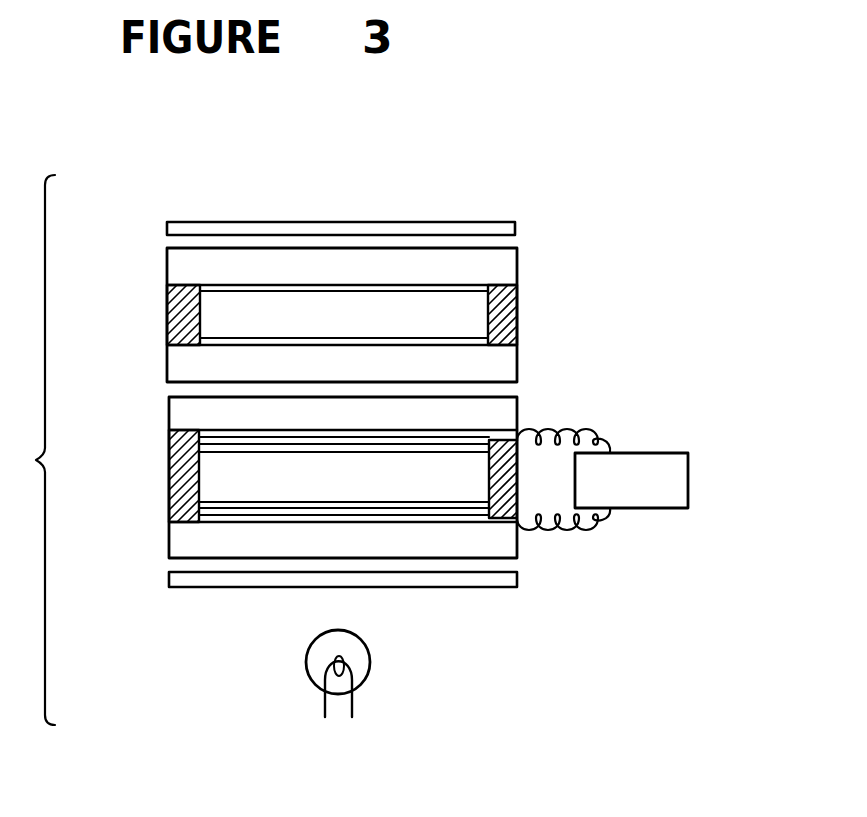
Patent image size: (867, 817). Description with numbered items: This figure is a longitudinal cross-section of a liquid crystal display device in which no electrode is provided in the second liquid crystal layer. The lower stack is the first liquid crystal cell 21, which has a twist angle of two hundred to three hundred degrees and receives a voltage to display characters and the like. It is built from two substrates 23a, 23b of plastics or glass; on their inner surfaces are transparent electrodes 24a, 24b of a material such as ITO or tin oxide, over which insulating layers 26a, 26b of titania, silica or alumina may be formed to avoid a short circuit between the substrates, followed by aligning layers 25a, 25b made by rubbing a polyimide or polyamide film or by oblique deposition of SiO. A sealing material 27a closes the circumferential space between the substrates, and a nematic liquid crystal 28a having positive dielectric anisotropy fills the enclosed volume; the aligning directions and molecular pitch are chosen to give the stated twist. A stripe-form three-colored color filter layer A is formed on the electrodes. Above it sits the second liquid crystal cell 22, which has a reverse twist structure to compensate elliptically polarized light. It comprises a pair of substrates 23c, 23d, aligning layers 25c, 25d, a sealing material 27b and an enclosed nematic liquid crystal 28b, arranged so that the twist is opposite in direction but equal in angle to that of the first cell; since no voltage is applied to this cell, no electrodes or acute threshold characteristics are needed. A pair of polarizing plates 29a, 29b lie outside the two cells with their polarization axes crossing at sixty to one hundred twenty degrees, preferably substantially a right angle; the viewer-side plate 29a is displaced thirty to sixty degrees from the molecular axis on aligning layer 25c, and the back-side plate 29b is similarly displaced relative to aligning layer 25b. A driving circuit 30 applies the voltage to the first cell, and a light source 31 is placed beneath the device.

The first liquid crystal cell 21 is at (364, 507).
The second liquid crystal cell 22 is at (346, 300).
The substrate 23a is at (495, 420).
The substrate 23b is at (497, 542).
The substrate 23c is at (510, 270).
The substrate 23d is at (500, 370).
The transparent electrode 24a is at (212, 433).
The transparent electrode 24b is at (230, 525).
The aligning layer 25a is at (210, 455).
The aligning layer 25b is at (205, 508).
The aligning layer 25c is at (466, 301).
The aligning layer 25d is at (466, 350).
The insulating layer 26a is at (210, 441).
The insulating layer 26b is at (205, 522).
The sealing material 27a is at (188, 490).
The sealing material 27b is at (187, 323).
The nematic liquid crystal 28a is at (257, 483).
The nematic liquid crystal 28b is at (458, 322).
The polarizing plate 29a is at (517, 233).
The polarizing plate 29b is at (517, 580).
The driving circuit 30 is at (657, 508).
The light source 31 is at (370, 665).
The color filter layer A is at (405, 438).